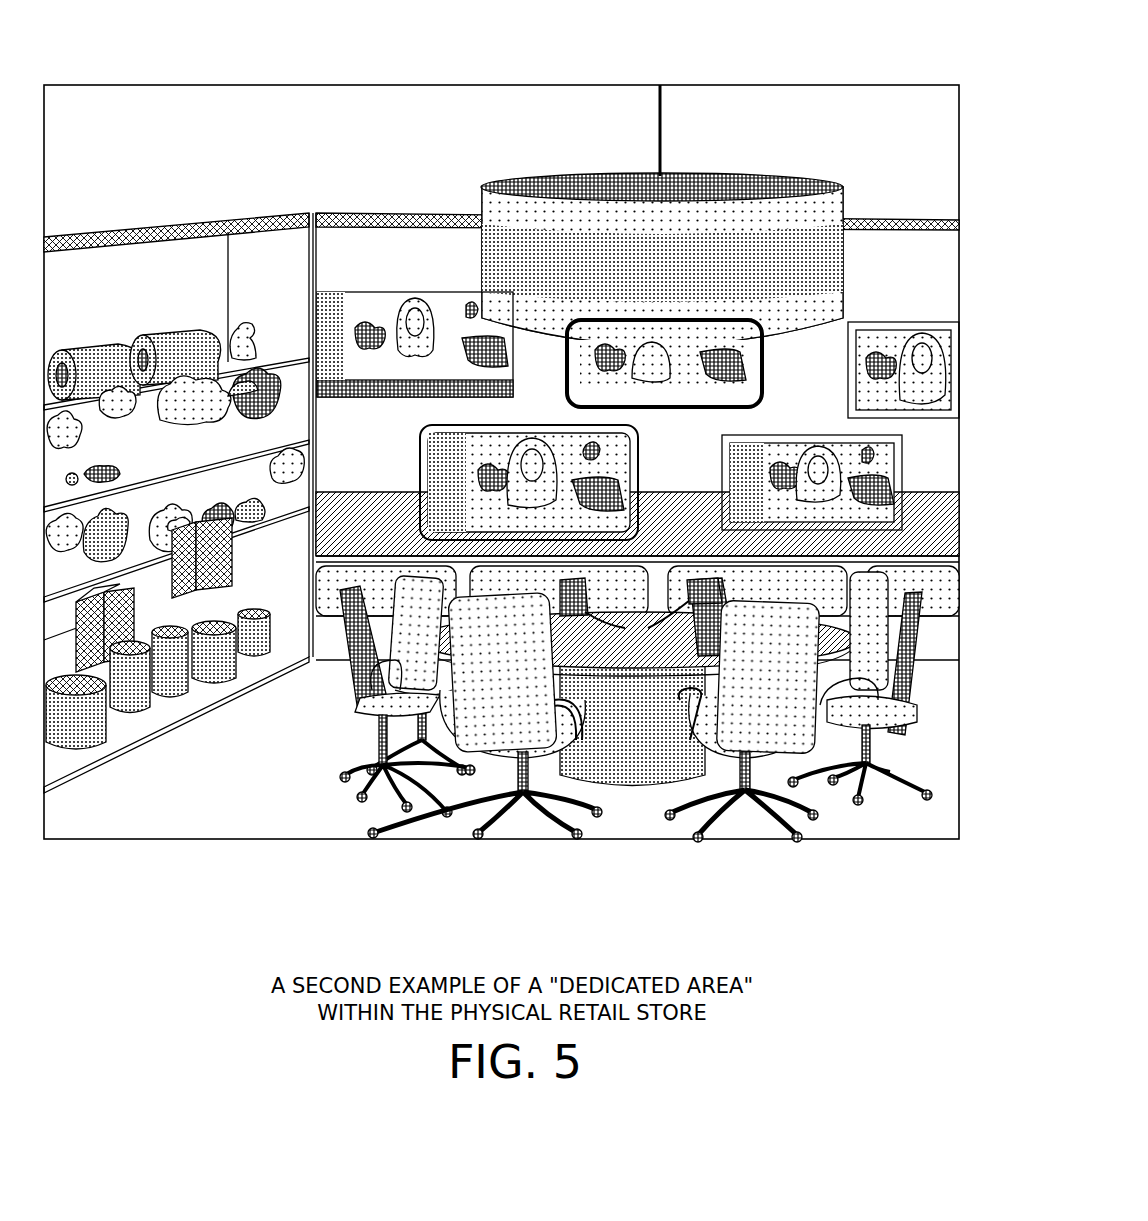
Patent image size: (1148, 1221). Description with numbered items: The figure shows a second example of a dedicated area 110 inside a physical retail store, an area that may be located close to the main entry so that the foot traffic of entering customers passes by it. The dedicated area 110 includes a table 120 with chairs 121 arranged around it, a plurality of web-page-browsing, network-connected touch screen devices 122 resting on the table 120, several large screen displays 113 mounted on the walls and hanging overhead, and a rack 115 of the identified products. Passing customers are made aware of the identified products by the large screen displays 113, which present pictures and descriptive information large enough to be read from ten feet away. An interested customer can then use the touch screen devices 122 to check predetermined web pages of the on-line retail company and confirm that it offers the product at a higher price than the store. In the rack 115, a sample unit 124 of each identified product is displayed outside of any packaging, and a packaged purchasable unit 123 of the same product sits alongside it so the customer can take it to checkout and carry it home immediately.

The dedicated area 110 is at (751, 97).
The large screen display 113 is at (638, 416).
The rack 115 is at (186, 720).
The table 120 is at (646, 752).
The chairs 121 is at (407, 745).
The touch screen device 122 is at (648, 617).
The purchasable unit 123 is at (128, 566).
The sample unit 124 is at (217, 512).